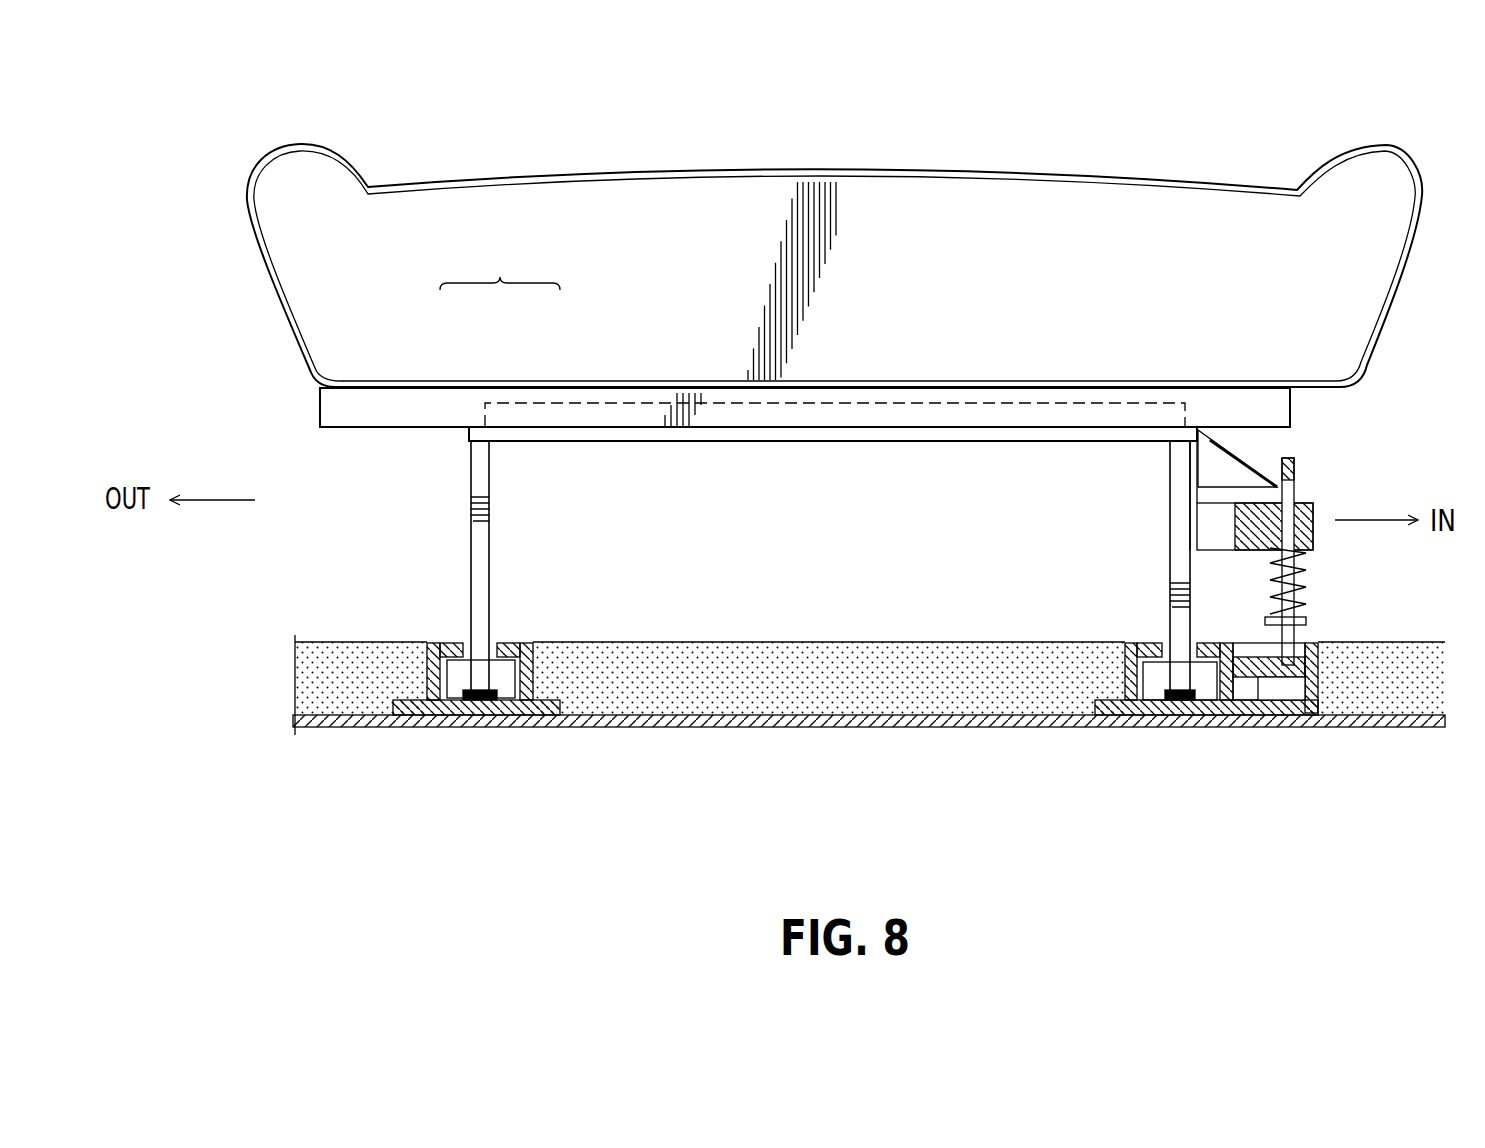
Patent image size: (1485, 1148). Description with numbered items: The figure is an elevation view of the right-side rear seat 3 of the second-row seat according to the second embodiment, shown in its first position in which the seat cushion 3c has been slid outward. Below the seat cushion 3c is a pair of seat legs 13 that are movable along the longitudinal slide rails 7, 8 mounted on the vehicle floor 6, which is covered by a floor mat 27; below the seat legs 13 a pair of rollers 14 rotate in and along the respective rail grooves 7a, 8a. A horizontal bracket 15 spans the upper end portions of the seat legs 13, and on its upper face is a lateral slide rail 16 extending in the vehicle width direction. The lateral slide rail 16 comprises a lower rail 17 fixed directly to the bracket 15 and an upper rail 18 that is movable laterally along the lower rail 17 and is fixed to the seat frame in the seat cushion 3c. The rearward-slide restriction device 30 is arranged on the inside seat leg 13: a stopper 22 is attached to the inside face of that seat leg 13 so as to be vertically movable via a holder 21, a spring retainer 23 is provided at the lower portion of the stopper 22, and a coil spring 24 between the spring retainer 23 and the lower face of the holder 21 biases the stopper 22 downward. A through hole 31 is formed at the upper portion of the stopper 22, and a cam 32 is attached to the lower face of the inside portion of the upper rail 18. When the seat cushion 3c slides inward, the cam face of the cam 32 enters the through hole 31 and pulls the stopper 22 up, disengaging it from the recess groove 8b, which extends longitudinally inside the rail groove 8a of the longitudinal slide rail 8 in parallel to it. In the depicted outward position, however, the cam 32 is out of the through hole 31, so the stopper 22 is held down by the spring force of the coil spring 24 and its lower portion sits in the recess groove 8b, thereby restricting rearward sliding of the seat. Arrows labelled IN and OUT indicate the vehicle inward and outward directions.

The right-side rear seat 3 is at (951, 158).
The seat cushion 3c is at (937, 295).
The floor panel 6 is at (783, 728).
The longitudinal slide rail 7 is at (496, 666).
The rail groove 7a is at (463, 705).
The longitudinal slide rail 8 is at (1197, 681).
The rail groove 8a is at (1197, 690).
The recess groove 8b is at (1258, 685).
The seat leg 13 is at (489, 510).
The roller 14 is at (520, 705).
The horizontal bracket 15 is at (735, 442).
The lateral slide rail 16 is at (500, 263).
The lower rail 17 is at (535, 385).
The upper rail 18 is at (415, 400).
The holder 21 is at (1200, 540).
The stopper 22 is at (1310, 637).
The spring retainer 23 is at (1265, 628).
The coil spring 24 is at (1300, 588).
The floor mat 27 is at (900, 660).
The rearward-slide restriction device 30 is at (1293, 514).
The through hole 31 is at (1300, 490).
The cam 32 is at (1222, 470).